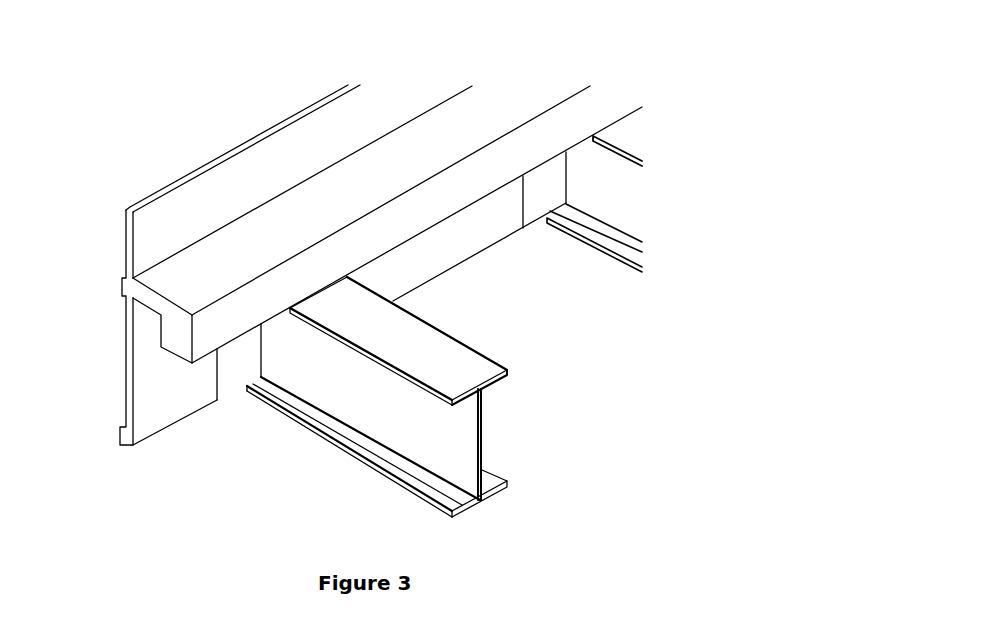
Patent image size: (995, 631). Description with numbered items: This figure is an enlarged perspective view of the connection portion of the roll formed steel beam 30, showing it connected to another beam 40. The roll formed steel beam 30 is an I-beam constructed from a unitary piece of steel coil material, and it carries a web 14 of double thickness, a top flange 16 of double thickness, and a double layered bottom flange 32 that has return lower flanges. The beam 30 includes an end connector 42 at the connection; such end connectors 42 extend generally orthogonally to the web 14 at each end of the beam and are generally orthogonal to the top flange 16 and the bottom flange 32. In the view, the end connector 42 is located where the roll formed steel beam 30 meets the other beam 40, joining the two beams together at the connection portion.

The web 14 is at (463, 433).
The top flange 16 is at (465, 353).
The roll formed steel beam 30 is at (387, 407).
The double layered bottom flange 32 is at (472, 492).
The beam 40 is at (158, 225).
The end connector 42 is at (242, 372).